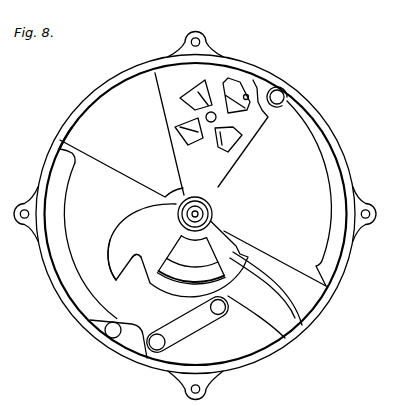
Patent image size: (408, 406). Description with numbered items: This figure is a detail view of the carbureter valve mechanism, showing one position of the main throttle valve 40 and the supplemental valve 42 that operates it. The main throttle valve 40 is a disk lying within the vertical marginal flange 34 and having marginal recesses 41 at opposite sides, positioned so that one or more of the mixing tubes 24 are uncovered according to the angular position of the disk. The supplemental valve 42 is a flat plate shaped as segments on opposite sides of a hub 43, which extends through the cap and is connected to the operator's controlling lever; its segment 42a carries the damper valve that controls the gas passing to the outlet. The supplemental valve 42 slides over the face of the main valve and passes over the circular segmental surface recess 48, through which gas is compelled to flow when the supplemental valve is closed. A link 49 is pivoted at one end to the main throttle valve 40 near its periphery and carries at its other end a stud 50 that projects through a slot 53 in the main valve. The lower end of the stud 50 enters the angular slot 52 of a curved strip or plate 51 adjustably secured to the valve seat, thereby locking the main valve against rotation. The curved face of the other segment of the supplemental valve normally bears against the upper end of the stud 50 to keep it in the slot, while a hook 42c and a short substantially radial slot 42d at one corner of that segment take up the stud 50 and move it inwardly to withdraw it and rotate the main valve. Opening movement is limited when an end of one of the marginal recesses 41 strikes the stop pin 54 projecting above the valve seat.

The vertical mixing chambers or tubes 24 is at (287, 103).
The vertical marginal flange 34 is at (58, 136).
The main throttle valve 40 is at (214, 212).
The marginal recesses 41 is at (314, 153).
The supplemental valve 42 is at (188, 185).
The segment of the supplemental valve 42a is at (221, 68).
The hook 42c is at (112, 265).
The short substantially radial slot 42d is at (128, 270).
The hub 43 is at (213, 222).
The surface recess 48 is at (121, 167).
The link 49 is at (187, 330).
The stud 50 is at (226, 312).
The curved strip or plate 51 is at (272, 282).
The angular slot 52 is at (233, 295).
The slot 53 is at (262, 258).
The stop pin 54 is at (287, 97).